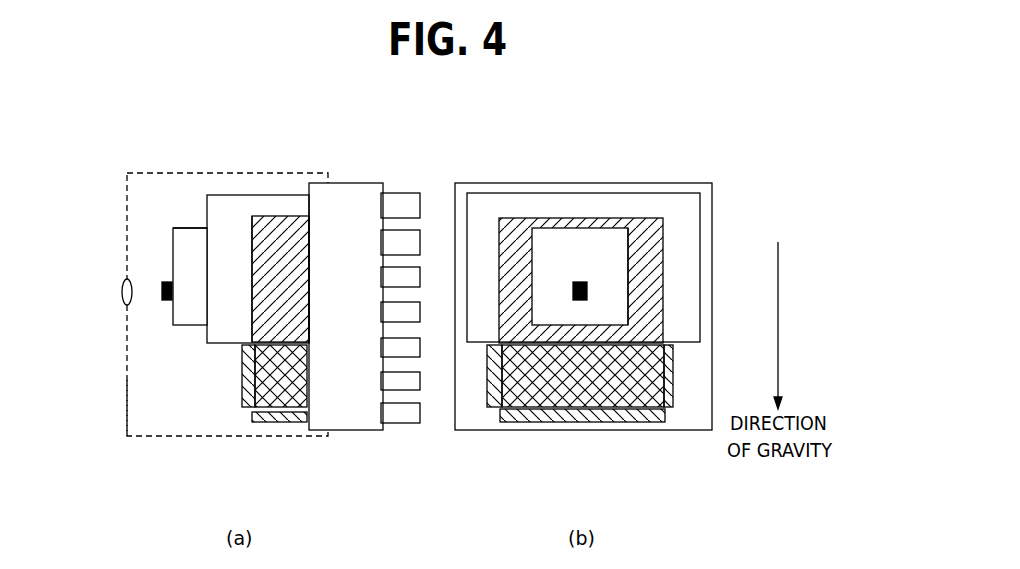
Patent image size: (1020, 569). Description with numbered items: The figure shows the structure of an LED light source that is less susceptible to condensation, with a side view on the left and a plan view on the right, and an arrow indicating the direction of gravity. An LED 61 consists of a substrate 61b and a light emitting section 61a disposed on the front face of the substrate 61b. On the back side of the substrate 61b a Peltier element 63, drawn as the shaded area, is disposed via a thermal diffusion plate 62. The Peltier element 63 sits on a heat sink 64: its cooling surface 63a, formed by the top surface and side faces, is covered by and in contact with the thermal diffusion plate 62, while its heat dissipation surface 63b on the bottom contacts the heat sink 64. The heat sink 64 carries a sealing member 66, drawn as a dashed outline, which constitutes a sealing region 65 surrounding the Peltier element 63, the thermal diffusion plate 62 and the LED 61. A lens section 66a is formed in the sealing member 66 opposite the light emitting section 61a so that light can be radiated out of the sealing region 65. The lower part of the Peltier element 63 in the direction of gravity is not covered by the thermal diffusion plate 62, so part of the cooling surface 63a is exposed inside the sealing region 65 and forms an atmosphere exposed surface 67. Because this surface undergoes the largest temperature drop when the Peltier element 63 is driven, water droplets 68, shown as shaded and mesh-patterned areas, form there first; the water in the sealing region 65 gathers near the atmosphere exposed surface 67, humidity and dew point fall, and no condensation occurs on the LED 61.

The LED 61 is at (173, 245).
The light emitting section 61a is at (165, 302).
The substrate 61b is at (182, 228).
The thermal diffusion plate 62 is at (247, 195).
The Peltier element 63 is at (280, 216).
The cooling surface 63a is at (252, 230).
The heat dissipation surface 63b is at (311, 230).
The heat sink 64 is at (475, 432).
The sealing region 65 is at (140, 410).
The sealing member 66 is at (127, 188).
The lens section 66a is at (122, 290).
The atmosphere exposed surface 67 is at (222, 347).
The water droplets 68 is at (242, 407).